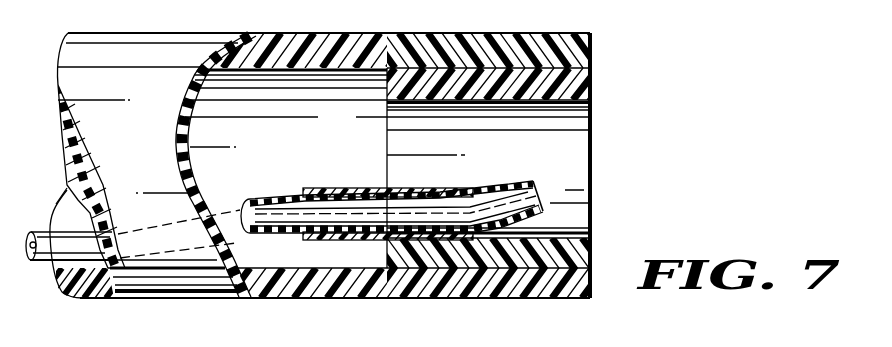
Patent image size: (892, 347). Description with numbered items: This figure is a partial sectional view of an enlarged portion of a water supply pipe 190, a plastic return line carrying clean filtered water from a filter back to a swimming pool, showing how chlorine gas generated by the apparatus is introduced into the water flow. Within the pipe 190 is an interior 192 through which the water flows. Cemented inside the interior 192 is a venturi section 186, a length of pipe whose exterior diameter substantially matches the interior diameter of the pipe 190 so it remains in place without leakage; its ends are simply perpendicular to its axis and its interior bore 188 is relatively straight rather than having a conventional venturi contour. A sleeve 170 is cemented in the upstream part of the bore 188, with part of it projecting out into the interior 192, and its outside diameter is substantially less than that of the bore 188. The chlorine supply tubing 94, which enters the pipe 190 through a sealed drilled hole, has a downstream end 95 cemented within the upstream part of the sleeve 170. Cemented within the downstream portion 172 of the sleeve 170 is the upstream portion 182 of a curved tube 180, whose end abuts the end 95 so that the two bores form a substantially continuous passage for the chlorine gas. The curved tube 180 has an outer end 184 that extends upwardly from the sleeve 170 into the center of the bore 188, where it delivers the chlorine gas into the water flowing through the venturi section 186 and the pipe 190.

The tubing 94 is at (38, 262).
The downstream end 95 is at (362, 194).
The sleeve 170 is at (311, 178).
The downstream portion 172 is at (455, 191).
The curved tube 180 is at (533, 220).
The upstream portion 182 is at (412, 171).
The outer end 184 is at (544, 198).
The venturi section 186 is at (588, 91).
The interior bore 188 is at (588, 183).
The water supply pipe 190 is at (308, 33).
The interior 192 is at (352, 135).